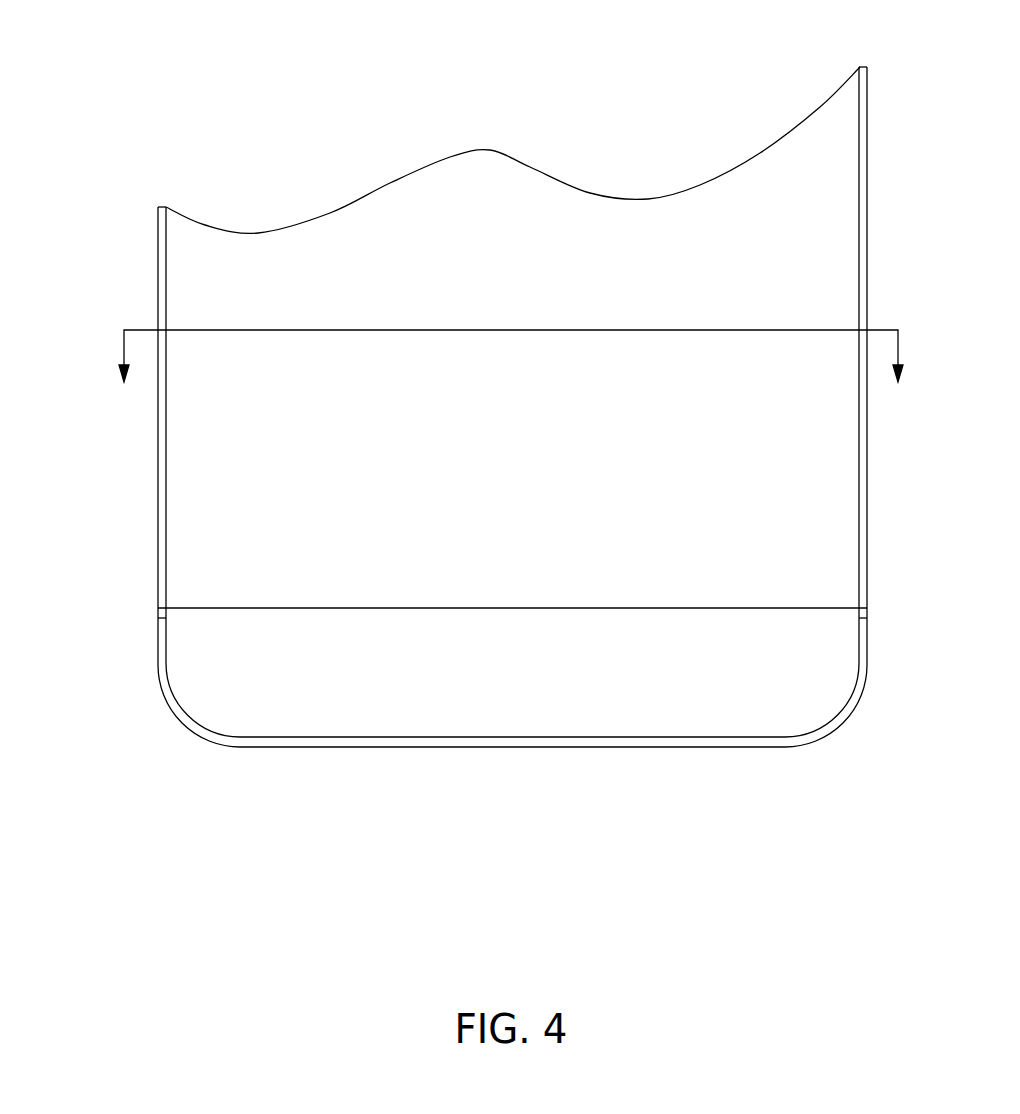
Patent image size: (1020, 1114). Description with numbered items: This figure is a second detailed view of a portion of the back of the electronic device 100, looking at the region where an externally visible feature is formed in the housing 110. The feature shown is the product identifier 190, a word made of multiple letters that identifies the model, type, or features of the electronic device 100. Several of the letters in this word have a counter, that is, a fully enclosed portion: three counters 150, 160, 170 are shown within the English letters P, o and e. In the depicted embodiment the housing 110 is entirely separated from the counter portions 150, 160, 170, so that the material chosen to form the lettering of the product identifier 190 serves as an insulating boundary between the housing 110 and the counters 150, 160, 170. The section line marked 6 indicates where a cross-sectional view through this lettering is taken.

The electronic device 100 is at (193, 26).
The housing 110 is at (157, 292).
The counter 150 is at (462, 318).
The counter 160 is at (535, 327).
The counter 170 is at (598, 322).
The product identifier 190 is at (430, 258).
The section line 6- 6 is at (511, 372).